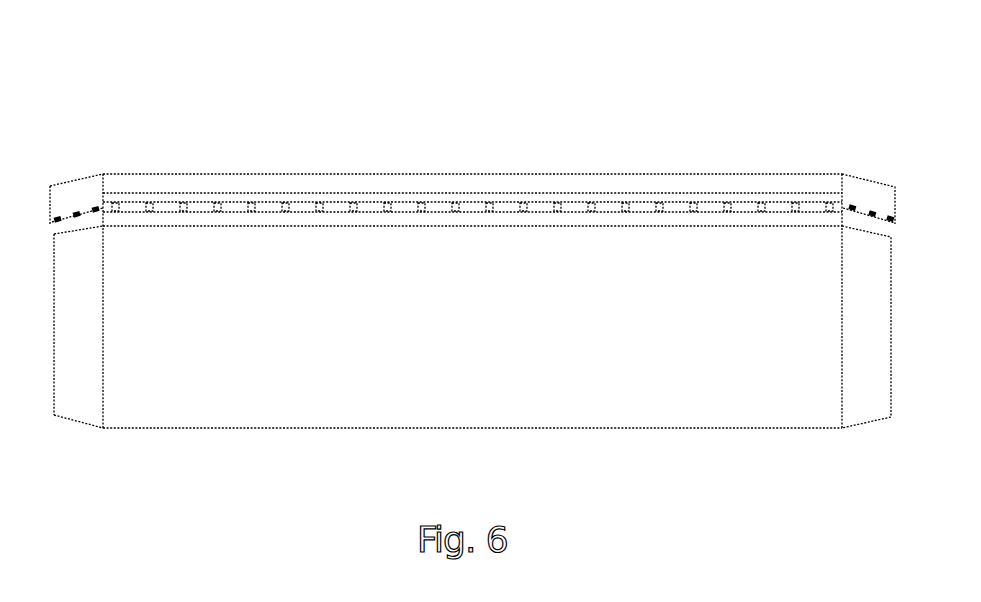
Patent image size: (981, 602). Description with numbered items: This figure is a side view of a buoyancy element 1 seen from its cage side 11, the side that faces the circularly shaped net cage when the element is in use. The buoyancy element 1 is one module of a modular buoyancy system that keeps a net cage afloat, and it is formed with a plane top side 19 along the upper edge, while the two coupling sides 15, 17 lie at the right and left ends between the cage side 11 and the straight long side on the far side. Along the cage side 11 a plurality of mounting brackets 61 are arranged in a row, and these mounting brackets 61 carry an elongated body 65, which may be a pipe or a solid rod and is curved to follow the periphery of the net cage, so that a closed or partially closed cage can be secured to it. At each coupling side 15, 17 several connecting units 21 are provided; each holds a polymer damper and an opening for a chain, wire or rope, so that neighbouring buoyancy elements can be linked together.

The buoyancy element 1 is at (334, 126).
The cage side 11 is at (207, 190).
The coupling side 15 is at (875, 191).
The coupling side 17 is at (95, 188).
The top side 19 is at (607, 173).
The connecting unit 21 is at (80, 211).
The mounting bracket 61 is at (422, 205).
The elongated body 65 is at (332, 198).